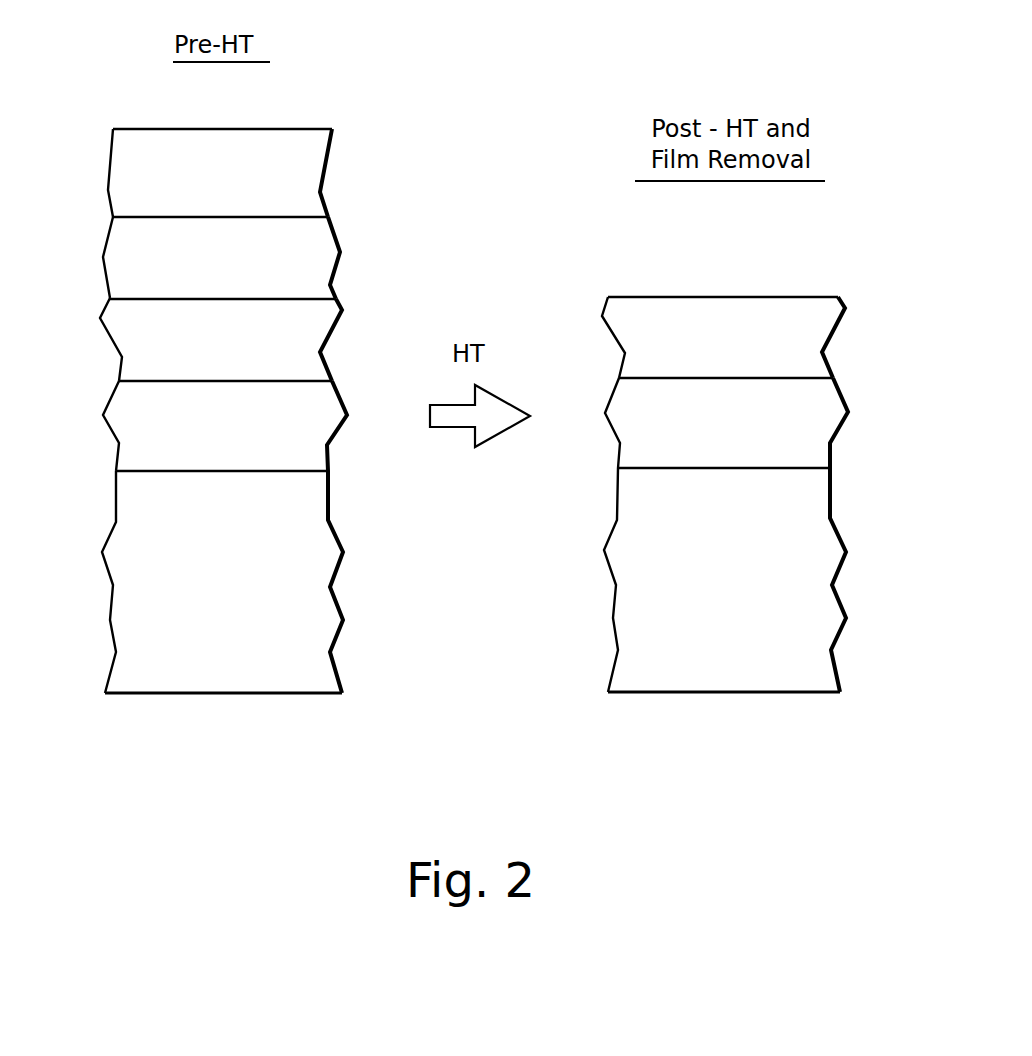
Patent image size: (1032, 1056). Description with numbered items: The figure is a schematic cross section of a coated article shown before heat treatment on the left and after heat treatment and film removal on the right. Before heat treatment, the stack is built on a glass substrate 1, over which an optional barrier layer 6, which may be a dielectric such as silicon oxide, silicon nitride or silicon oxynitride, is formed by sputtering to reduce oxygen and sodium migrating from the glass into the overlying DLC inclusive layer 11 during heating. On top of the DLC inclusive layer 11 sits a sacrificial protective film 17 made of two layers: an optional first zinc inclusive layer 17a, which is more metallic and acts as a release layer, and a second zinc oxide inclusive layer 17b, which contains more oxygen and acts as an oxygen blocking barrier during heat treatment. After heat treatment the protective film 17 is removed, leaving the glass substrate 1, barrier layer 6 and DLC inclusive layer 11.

The glass substrate 1 is at (327, 615).
The barrier layer 6 is at (305, 452).
The DLC inclusive layer 11 is at (323, 310).
The sacrificial protective film 17 is at (232, 214).
The first zinc inclusive layer 17a is at (320, 238).
The second zinc oxide inclusive layer 17b is at (312, 157).